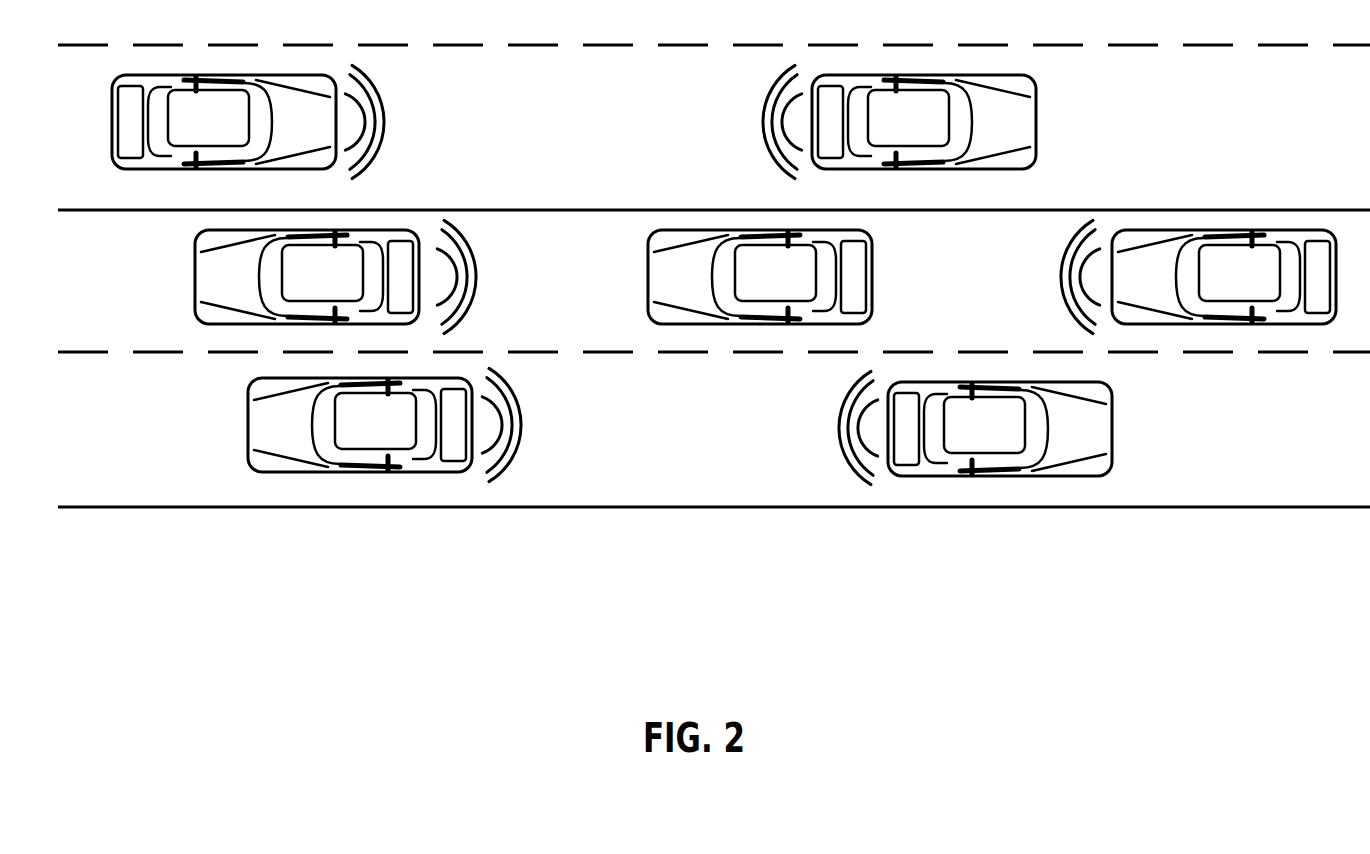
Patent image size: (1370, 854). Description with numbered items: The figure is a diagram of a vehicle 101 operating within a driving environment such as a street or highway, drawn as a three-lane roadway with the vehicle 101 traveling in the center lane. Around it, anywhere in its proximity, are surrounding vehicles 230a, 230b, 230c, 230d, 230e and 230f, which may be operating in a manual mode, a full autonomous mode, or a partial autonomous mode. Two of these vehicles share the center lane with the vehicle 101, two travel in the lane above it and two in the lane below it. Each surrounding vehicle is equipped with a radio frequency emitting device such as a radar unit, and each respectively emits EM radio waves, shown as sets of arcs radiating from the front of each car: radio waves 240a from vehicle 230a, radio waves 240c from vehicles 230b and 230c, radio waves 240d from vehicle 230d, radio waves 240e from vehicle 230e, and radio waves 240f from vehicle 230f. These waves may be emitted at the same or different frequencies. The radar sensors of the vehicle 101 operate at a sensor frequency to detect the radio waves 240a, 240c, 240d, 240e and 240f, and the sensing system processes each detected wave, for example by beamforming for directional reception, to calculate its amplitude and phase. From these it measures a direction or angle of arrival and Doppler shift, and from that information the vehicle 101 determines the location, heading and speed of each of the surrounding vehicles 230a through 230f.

The vehicle 101 is at (747, 291).
The surrounding vehicle 230a is at (347, 439).
The surrounding vehicle 230b is at (294, 291).
The surrounding vehicle 230c is at (183, 136).
The surrounding vehicle 230d is at (959, 443).
The surrounding vehicle 230e is at (1211, 291).
The surrounding vehicle 230f is at (883, 136).
The EM radio wave 240a is at (524, 432).
The EM radio wave 240c is at (386, 128).
The EM radio wave 240d is at (838, 434).
The EM radio wave 240e is at (1062, 275).
The EM radio wave 240f is at (762, 131).